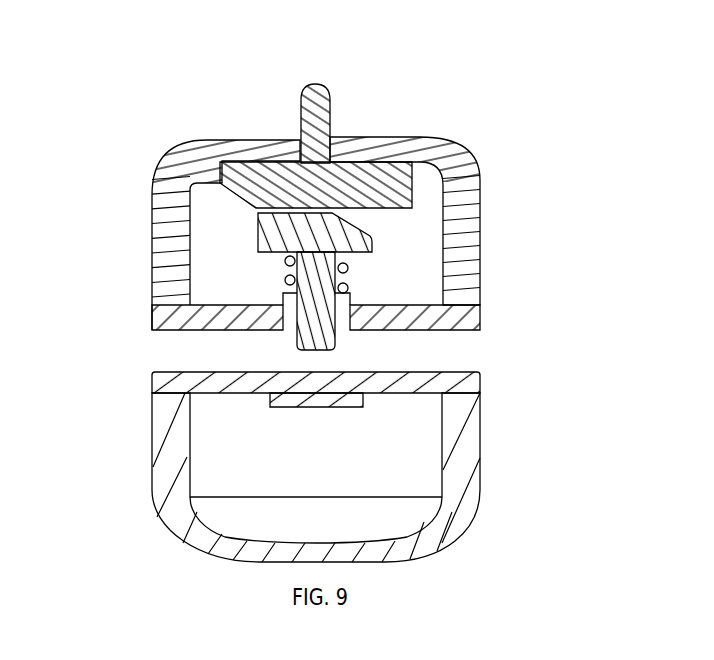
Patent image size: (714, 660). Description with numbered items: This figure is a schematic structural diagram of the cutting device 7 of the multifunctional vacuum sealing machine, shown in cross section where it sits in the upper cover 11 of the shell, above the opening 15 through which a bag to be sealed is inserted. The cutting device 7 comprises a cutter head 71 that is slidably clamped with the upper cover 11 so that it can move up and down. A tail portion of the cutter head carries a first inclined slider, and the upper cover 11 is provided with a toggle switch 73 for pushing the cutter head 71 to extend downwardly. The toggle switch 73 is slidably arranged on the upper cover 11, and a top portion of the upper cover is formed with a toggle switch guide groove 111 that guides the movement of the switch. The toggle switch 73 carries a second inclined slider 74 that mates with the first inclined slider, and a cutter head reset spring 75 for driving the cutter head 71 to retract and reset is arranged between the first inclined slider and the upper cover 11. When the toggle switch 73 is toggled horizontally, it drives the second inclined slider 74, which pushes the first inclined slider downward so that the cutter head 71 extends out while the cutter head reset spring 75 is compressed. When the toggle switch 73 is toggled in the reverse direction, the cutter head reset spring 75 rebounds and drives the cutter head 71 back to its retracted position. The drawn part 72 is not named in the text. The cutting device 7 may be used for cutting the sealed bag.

The cutting device 7 is at (325, 200).
The upper cover 11 is at (287, 188).
The opening 15 is at (255, 360).
The cutter head 71 is at (335, 338).
The sealing plate of valve core 72 is at (372, 230).
The toggle switch 73 is at (313, 85).
The second inclined slider 74 is at (255, 202).
The cutter head reset spring 75 is at (285, 283).
The toggle switch guide groove 111 is at (348, 147).